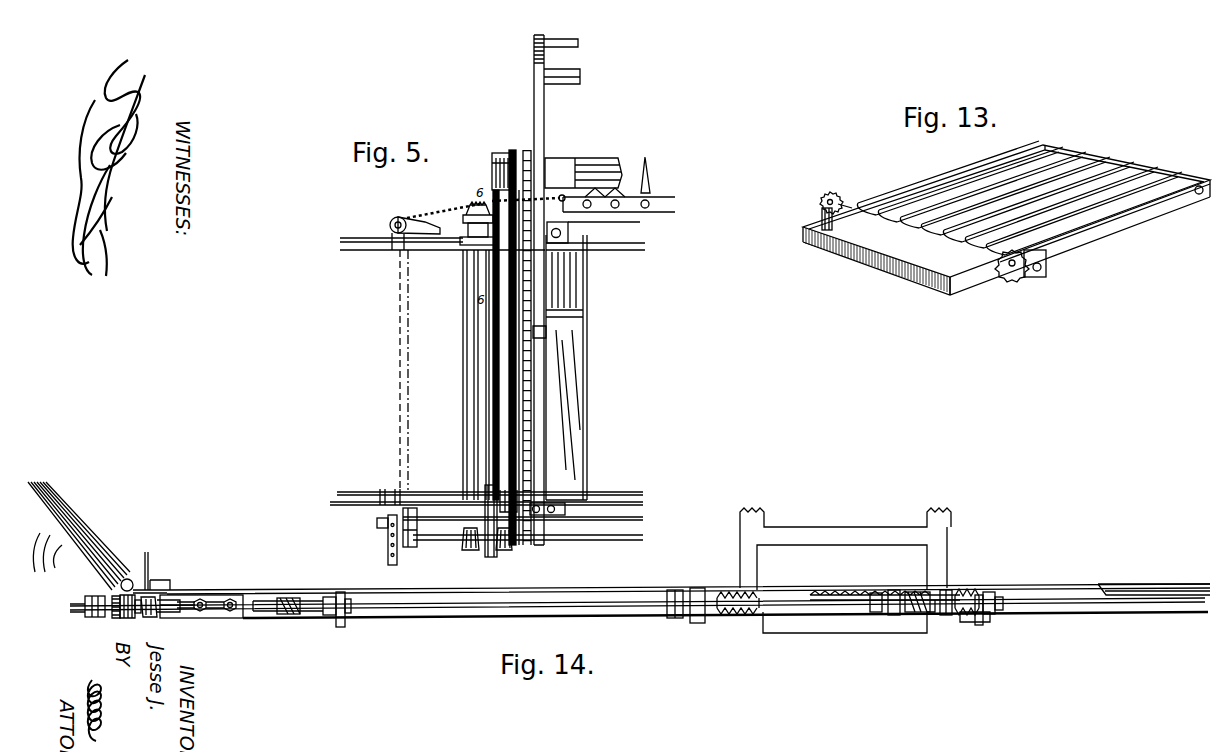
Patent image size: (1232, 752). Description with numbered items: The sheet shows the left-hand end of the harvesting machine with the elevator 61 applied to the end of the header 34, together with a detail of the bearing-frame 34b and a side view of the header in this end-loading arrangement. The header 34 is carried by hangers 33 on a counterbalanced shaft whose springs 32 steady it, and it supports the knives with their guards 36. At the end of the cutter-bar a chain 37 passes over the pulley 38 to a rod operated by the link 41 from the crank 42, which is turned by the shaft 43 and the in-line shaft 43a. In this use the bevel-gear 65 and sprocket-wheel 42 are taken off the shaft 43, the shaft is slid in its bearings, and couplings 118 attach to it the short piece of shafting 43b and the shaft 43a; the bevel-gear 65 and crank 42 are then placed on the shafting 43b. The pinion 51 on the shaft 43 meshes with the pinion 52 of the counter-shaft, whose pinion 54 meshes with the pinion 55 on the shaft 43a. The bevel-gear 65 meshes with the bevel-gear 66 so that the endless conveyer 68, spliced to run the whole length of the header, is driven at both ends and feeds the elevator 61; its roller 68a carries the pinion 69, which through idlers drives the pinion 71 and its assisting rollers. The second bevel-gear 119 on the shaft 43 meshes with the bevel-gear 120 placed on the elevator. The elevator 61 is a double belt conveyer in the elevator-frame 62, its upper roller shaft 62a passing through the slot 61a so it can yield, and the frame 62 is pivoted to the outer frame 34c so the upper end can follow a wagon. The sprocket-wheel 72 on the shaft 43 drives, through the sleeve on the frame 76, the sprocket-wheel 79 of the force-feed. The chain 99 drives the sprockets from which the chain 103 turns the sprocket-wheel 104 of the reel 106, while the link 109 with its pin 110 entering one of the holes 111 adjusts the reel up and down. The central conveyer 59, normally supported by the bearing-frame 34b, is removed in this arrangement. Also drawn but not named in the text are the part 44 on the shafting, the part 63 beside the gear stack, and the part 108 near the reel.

In FIG. 14, the springs 32 is at (348, 615).
In FIG. 14, the hangers 33 is at (696, 623).
In FIG. 5, the header 34 is at (638, 516).
In FIG. 13, the bearing-frame 34b is at (1097, 231).
In FIG. 14, the outer frame 34c is at (217, 614).
In FIG. 14, the guards 36 is at (270, 610).
In FIG. 5, the chain 37 is at (478, 206).
In FIG. 5, the pulley 38 is at (403, 217).
In FIG. 14, the link 41 is at (84, 608).
In FIG. 5, the eccentric or crank 42 is at (490, 552).
In FIG. 14, the eccentric or crank 42 is at (138, 615).
In FIG. 14, the shaft 43 is at (604, 610).
In FIG. 14, the shaft 43a is at (1048, 598).
In FIG. 5, the short piece of shafting 43b is at (596, 542).
In FIG. 14, the short piece of shafting 43b is at (165, 600).
In FIG. 14, the collar 44 is at (682, 619).
In FIG. 14, the pinion 51 is at (877, 593).
In FIG. 13, the pinion 52 is at (820, 204).
In FIG. 13, the pinion 54 is at (1012, 277).
In FIG. 14, the pinion 55 is at (948, 590).
In FIG. 13, the endless conveyer 59 is at (947, 178).
In FIG. 5, the elevator 61 is at (433, 375).
In FIG. 14, the elevator 61 is at (47, 565).
In FIG. 14, the slot 61a is at (133, 576).
In FIG. 14, the elevator-frame 62 is at (89, 538).
In FIG. 14, the shaft 62a is at (127, 579).
In FIG. 5, the bracket 63 is at (468, 239).
In FIG. 14, the bracket 63 is at (176, 617).
In FIG. 5, the bevel-gear 65 is at (506, 548).
In FIG. 14, the bevel-gear 65 is at (153, 618).
In FIG. 5, the bevel-gear 66 is at (523, 521).
In FIG. 5, the endless conveyer 68 is at (567, 325).
In FIG. 14, the endless conveyer 68 is at (1140, 582).
In FIG. 5, the roller 68a is at (648, 188).
In FIG. 14, the pinion 69 is at (996, 603).
In FIG. 14, the pinion 71 is at (947, 619).
In FIG. 14, the sprocket-wheel 72 is at (895, 591).
In FIG. 14, the frame 76 is at (753, 526).
In FIG. 14, the sprocket-wheel 79 is at (962, 622).
In FIG. 5, the chain 99 is at (490, 500).
In FIG. 5, the chain 103 is at (534, 332).
In FIG. 5, the sprocket-wheel 104 is at (526, 150).
In FIG. 5, the reel 106 is at (545, 116).
In FIG. 5, the block 108 is at (606, 165).
In FIG. 5, the link 109 is at (500, 246).
In FIG. 5, the pin 110 is at (470, 500).
In FIG. 5, the holes 111 is at (505, 312).
In FIG. 14, the couplings 118 is at (297, 597).
In FIG. 5, the bevel-gear 119 is at (420, 549).
In FIG. 14, the bevel-gear 119 is at (114, 620).
In FIG. 5, the bevel-gear 120 is at (468, 528).
In FIG. 14, the bevel-gear 120 is at (126, 620).